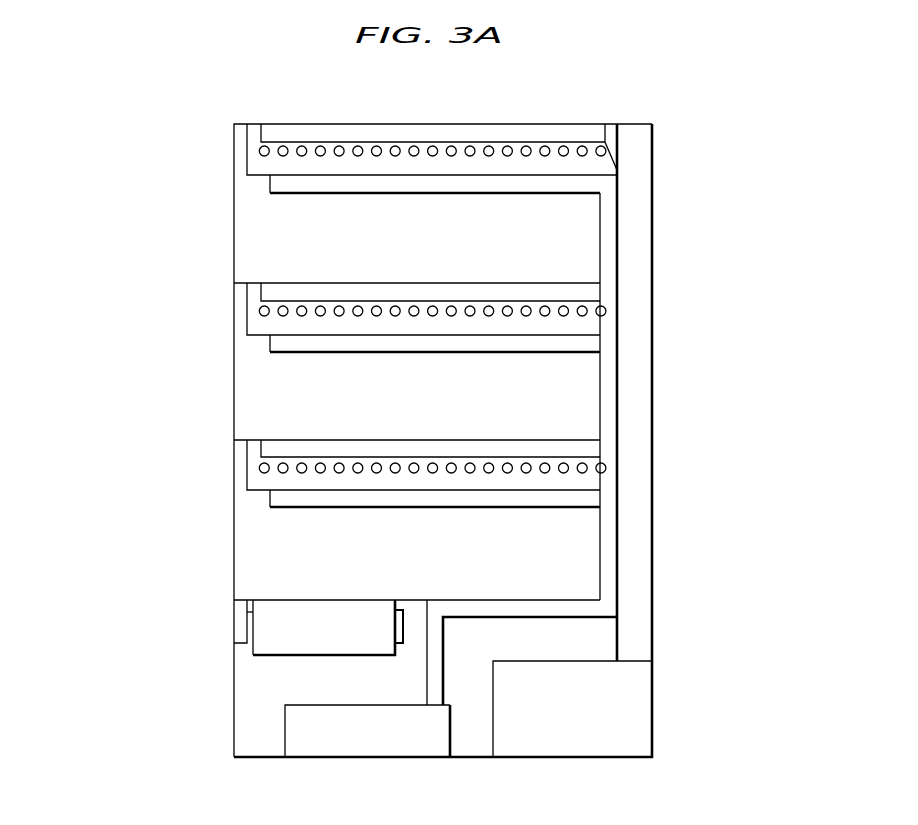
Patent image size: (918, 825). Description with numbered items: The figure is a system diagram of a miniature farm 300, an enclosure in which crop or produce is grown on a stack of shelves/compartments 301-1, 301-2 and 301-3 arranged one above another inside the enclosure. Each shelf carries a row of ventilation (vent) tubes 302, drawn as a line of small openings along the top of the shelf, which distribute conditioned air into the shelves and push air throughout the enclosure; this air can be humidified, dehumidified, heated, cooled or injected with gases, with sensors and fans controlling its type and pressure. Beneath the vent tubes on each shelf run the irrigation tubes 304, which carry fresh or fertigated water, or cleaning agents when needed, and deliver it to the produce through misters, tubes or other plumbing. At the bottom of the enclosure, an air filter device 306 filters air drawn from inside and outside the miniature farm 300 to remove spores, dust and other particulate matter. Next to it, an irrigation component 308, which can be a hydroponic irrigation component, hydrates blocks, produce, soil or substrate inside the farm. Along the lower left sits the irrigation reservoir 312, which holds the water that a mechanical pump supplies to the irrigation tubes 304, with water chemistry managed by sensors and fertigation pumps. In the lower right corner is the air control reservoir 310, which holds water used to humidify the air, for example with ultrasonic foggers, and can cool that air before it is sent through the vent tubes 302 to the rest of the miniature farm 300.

The miniature farm 300 is at (612, 82).
The shelf/compartment 301-1 is at (362, 182).
The shelf/compartment 301-2 is at (248, 379).
The shelf/compartment 301-3 is at (248, 514).
The vent tubes 302 is at (259, 146).
The irrigation tubes 304 is at (548, 352).
The air filter device 306 is at (298, 600).
The irrigation component 308 is at (600, 600).
The air control reservoir 310 is at (627, 727).
The irrigation reservoir 312 is at (315, 726).